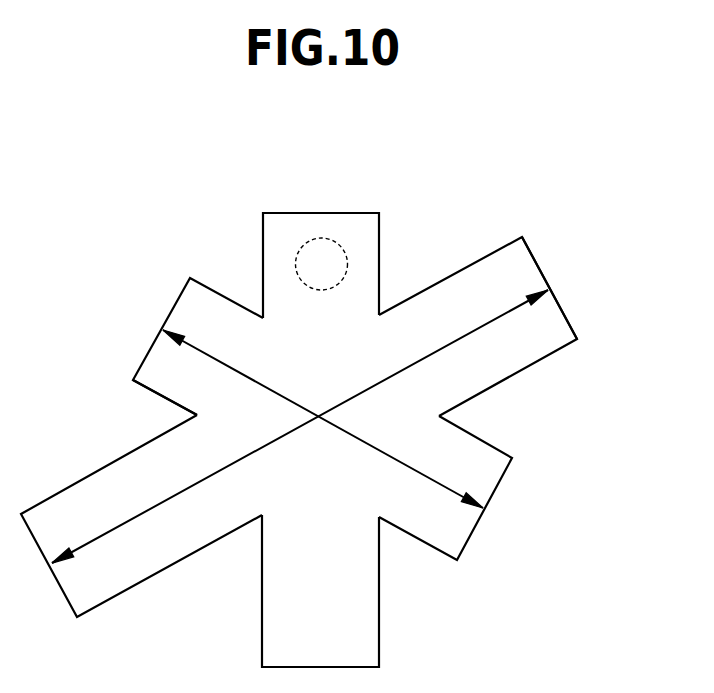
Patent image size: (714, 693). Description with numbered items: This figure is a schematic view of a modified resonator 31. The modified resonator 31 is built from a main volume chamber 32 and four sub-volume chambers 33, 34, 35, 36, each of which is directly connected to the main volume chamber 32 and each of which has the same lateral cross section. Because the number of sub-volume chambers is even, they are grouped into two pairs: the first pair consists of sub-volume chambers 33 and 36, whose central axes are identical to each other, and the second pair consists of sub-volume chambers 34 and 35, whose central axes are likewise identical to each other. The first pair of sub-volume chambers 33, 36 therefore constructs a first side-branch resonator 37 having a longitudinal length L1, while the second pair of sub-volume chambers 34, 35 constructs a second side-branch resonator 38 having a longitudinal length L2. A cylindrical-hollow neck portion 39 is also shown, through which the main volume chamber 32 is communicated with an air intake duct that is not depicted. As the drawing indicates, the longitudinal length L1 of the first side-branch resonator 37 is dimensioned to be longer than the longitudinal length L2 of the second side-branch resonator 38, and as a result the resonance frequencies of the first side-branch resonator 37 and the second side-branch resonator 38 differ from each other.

The modified resonator 31 is at (455, 210).
The main volume chamber 32 is at (358, 228).
The sub-volume chamber 33 is at (540, 343).
The sub-volume chamber 34 is at (493, 458).
The sub-volume chamber 35 is at (200, 297).
The sub-volume chamber 36 is at (118, 582).
The first side-branch resonator 37 is at (556, 271).
The second side-branch resonator 38 is at (145, 391).
The cylindrical-hollow neck portion 39 is at (319, 238).
The longitudinal length of first side-branch resonator L1 is at (505, 313).
The longitudinal length of second side-branch resonator L2 is at (433, 485).